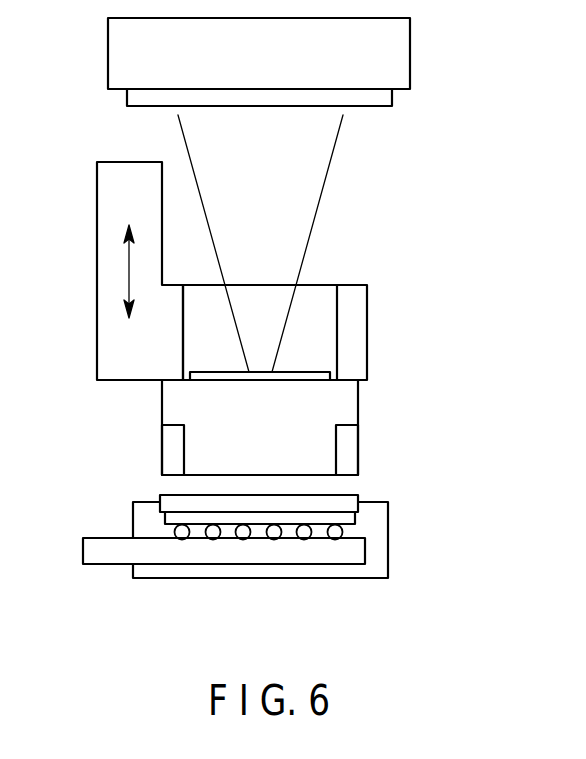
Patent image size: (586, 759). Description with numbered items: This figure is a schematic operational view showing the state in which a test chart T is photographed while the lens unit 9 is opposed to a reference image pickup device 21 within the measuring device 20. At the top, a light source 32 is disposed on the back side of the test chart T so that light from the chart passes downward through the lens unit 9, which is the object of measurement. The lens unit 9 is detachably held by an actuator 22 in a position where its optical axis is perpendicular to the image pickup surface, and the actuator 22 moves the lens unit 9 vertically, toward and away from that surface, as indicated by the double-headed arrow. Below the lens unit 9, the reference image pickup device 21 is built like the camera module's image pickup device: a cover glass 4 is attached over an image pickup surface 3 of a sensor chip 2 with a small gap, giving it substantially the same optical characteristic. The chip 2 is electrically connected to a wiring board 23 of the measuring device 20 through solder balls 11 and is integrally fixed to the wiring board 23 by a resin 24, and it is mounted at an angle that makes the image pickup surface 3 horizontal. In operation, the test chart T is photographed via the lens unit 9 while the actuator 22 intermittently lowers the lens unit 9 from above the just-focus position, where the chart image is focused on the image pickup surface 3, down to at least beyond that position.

The light source 32 is at (397, 57).
The test chart T is at (383, 138).
The actuator 22 is at (110, 193).
The measuring device 20 is at (428, 310).
The lens unit 9 is at (345, 407).
The cover glass 4 is at (342, 500).
The image pickup surface 3 is at (197, 510).
The chip 2 is at (347, 518).
The solder balls 11 is at (215, 530).
The wiring board 23 is at (100, 555).
The resin 24 is at (375, 563).
The reference image pickup device 21 is at (160, 517).